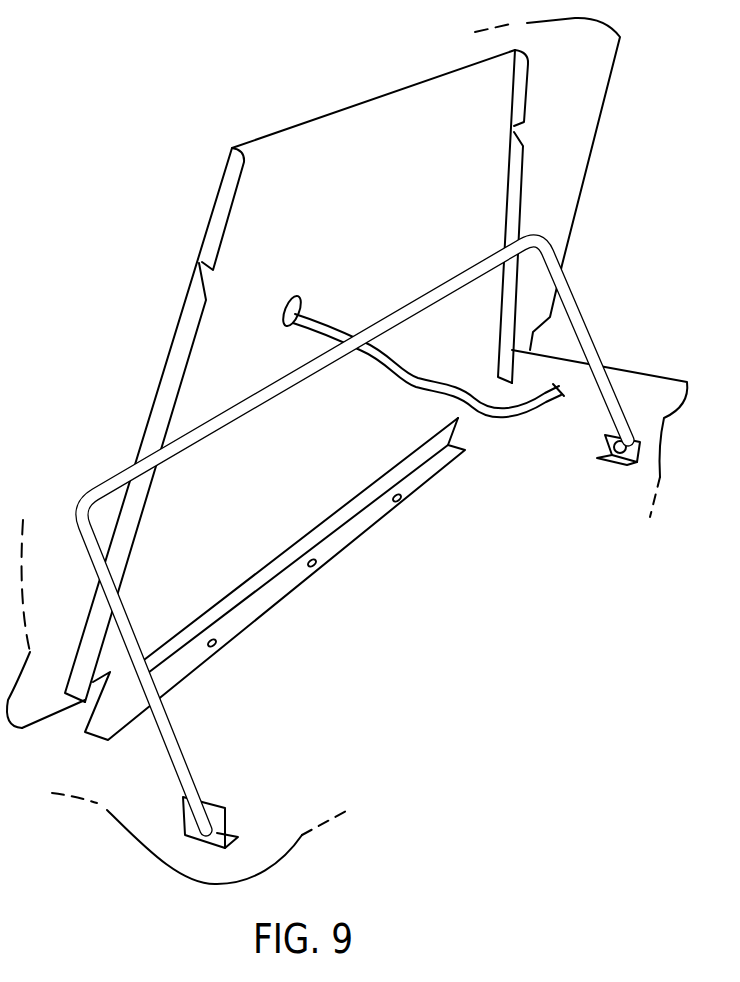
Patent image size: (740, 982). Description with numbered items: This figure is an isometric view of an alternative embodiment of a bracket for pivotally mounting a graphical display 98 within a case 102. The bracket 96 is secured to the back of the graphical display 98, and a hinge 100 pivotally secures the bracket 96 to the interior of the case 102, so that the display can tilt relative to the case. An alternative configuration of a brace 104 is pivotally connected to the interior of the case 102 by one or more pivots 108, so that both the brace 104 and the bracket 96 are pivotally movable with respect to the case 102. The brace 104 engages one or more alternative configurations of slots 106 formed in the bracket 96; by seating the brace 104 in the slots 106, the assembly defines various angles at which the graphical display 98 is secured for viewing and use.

The bracket 96 is at (393, 223).
The graphical display 98 is at (580, 75).
The hinge 100 is at (352, 535).
The case 102 is at (488, 663).
The brace 104 is at (107, 480).
The slots 106 is at (208, 257).
The pivots 108 is at (613, 465).